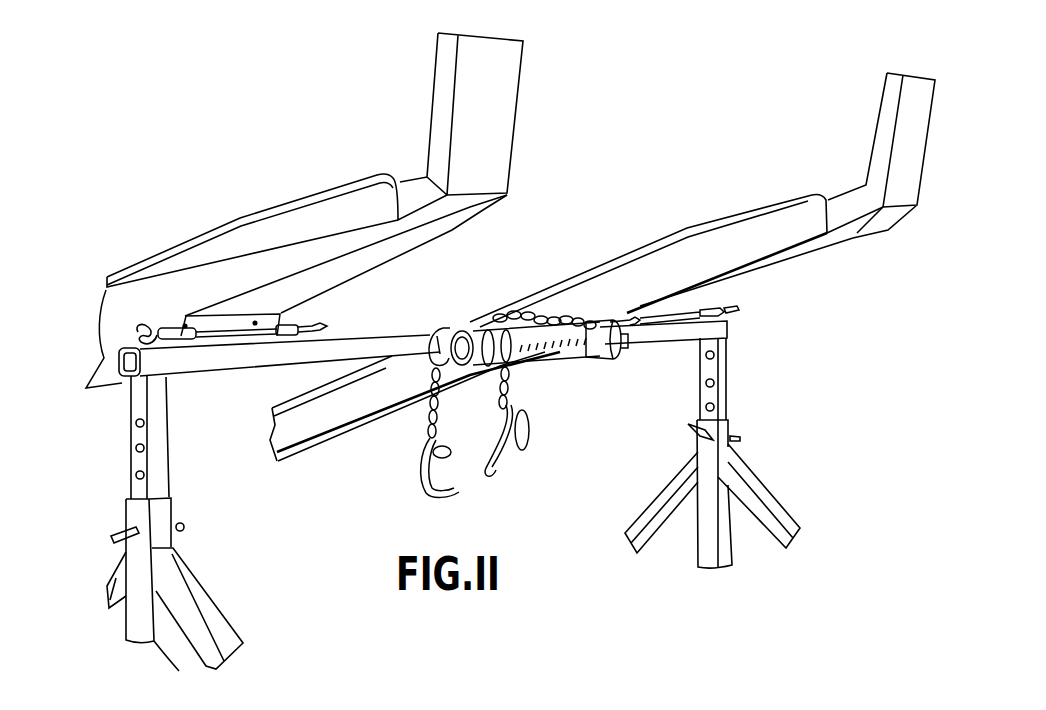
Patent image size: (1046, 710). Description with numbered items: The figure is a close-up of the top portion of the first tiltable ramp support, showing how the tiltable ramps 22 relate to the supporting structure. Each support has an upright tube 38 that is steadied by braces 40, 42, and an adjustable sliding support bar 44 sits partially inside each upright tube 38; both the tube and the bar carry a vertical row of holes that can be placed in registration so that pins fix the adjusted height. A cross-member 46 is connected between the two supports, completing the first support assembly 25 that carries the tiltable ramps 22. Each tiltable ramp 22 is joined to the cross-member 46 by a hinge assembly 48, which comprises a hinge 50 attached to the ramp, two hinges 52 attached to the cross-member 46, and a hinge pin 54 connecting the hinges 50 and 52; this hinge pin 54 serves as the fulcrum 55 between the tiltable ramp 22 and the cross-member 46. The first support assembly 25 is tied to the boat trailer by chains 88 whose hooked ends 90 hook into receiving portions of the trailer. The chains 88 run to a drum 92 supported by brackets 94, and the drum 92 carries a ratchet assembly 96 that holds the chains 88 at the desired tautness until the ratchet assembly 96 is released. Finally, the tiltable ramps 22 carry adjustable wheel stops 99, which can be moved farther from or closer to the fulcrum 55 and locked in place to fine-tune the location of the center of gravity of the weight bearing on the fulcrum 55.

The tiltable ramp 22 is at (216, 255).
The first support assembly 25 is at (438, 504).
The upright tube 38 is at (162, 514).
The brace 40 is at (189, 589).
The brace 42 is at (120, 574).
The adjustable sliding support bar 44 is at (132, 442).
The cross-member 46 is at (262, 362).
The hinge assembly 48 is at (442, 323).
The hinge 50 is at (228, 326).
The hinge 52 is at (296, 317).
The hinge pin 54 is at (147, 322).
The fulcrum 55 is at (140, 333).
The chain 88 is at (505, 405).
The hooked end 90 is at (450, 493).
The drum 92 is at (537, 376).
The bracket 94 is at (617, 347).
The ratchet assembly 96 is at (457, 327).
The adjustable wheel stop 99 is at (488, 105).